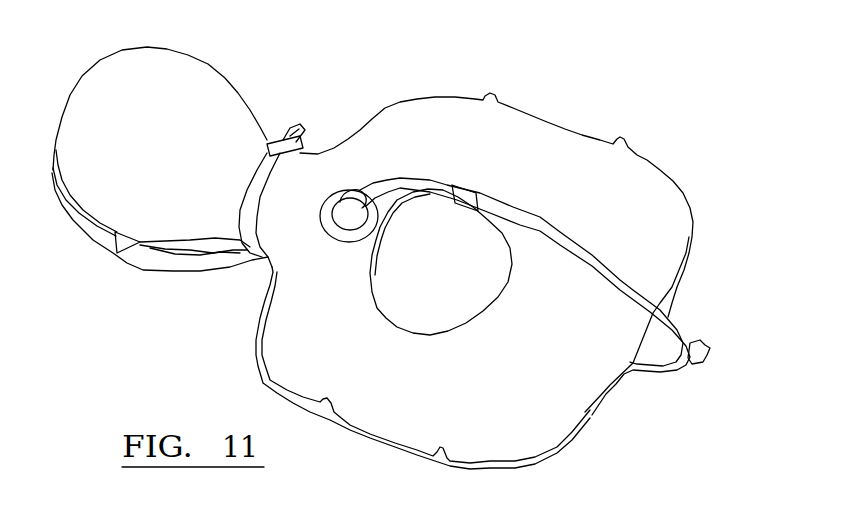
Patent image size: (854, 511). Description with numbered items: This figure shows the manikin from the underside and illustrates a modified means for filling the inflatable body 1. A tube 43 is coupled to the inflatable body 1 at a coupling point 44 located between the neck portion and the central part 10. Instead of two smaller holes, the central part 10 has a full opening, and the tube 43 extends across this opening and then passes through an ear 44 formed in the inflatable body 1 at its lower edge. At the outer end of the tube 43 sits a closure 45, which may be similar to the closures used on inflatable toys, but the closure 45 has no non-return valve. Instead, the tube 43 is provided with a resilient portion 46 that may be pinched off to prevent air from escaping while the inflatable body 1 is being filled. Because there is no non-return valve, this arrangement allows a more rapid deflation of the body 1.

The inflatable body 1 is at (550, 143).
The central part 10 is at (393, 300).
The tube 43 is at (613, 273).
The ear 44 is at (350, 207).
The closure 45 is at (697, 366).
The resilient portion 46 is at (465, 193).